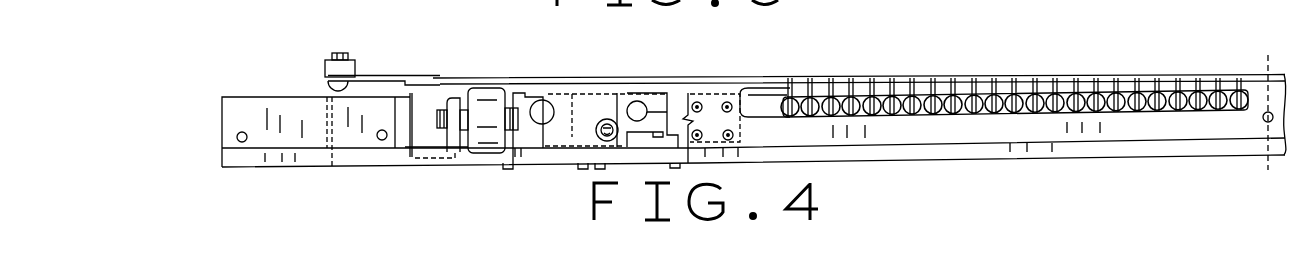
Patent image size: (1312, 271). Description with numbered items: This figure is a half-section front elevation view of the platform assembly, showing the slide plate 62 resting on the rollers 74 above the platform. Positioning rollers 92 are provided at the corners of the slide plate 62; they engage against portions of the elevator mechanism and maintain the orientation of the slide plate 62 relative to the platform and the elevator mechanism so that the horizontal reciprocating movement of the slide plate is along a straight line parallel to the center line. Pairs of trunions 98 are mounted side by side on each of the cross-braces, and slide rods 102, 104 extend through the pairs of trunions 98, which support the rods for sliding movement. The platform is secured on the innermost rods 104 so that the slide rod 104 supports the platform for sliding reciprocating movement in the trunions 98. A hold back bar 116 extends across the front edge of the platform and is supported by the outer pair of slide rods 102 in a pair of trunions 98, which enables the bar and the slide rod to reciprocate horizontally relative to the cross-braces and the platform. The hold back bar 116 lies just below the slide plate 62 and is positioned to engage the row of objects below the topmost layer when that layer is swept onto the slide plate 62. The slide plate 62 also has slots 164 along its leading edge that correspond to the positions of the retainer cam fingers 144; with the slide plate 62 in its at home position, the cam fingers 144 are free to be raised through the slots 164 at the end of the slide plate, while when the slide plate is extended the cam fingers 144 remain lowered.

The slide plate 62 is at (982, 78).
The rollers 74 is at (486, 103).
The positioning rollers 92 is at (326, 72).
The trunions 98 is at (603, 87).
The slide rods 102 is at (542, 112).
The slide rods 104 is at (638, 110).
The hold back bar 116 is at (1163, 125).
The retainer cam fingers 144 is at (1217, 72).
The slots 164 is at (1196, 66).